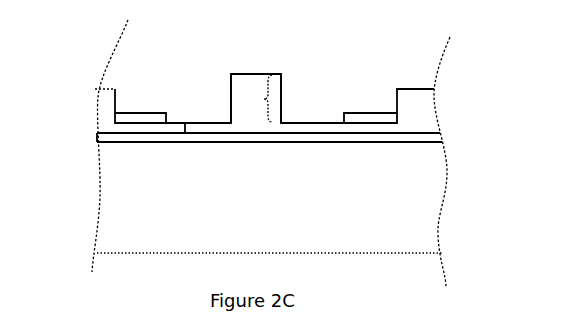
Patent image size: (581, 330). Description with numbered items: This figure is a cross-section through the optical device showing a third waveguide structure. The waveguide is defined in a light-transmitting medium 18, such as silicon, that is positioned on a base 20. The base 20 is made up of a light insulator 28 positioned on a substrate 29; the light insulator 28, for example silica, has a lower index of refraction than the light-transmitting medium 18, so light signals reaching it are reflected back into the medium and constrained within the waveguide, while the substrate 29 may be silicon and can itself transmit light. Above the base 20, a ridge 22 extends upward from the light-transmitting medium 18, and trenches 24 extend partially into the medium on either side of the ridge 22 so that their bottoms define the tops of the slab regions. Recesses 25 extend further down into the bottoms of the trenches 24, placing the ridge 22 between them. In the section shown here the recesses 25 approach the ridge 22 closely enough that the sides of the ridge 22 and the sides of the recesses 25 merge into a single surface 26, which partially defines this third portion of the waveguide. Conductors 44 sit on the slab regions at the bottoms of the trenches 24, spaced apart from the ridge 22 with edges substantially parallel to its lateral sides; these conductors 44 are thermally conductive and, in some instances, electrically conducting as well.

The light-transmitting medium 18 is at (96, 100).
The base 20 is at (70, 135).
The ridge 22 is at (240, 72).
The trenches 24 is at (295, 60).
The recesses 25 is at (184, 135).
The single surface 26 is at (255, 98).
The light insulator 28 is at (202, 143).
The substrate 29 is at (375, 243).
The conductors 44 is at (155, 112).